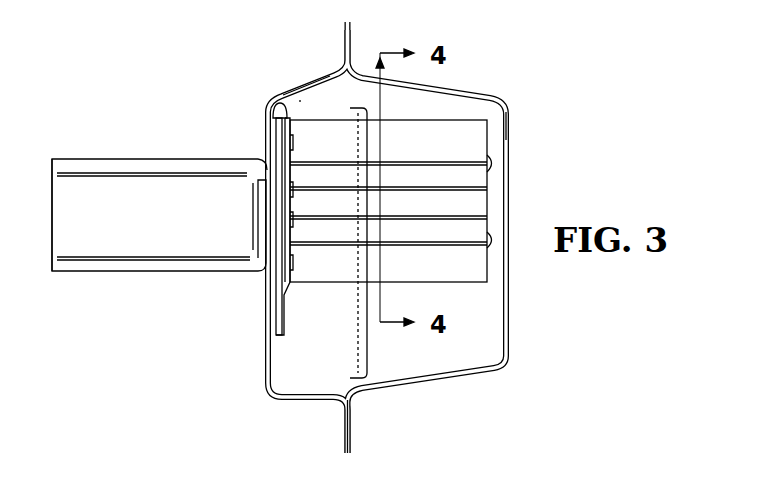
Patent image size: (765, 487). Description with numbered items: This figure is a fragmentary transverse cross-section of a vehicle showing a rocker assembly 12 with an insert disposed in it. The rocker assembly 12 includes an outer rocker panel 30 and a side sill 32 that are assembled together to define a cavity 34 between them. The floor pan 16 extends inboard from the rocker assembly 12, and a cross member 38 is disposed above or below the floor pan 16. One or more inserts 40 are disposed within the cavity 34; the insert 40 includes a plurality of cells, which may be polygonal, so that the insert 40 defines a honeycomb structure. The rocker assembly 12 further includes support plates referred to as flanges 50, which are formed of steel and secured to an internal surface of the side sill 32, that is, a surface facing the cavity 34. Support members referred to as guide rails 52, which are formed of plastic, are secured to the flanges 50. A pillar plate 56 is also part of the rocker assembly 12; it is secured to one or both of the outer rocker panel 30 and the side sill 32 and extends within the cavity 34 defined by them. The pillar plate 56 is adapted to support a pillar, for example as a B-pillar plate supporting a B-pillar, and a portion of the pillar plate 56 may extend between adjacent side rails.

The rocker assembly 12 is at (503, 100).
The floor pan 16 is at (137, 272).
The outer rocker panel 30 is at (465, 100).
The side sill 32 is at (288, 92).
The cavity 34 is at (325, 105).
The cross member 38 is at (143, 158).
The insert 40 is at (470, 282).
The flange 50 is at (278, 125).
The guide rail 52 is at (268, 100).
The pillar plate 56 is at (356, 390).